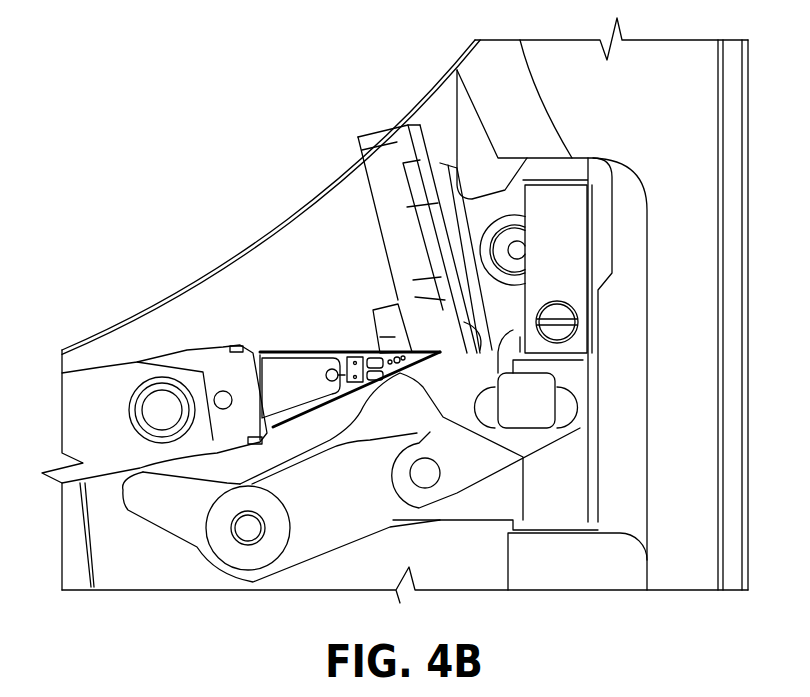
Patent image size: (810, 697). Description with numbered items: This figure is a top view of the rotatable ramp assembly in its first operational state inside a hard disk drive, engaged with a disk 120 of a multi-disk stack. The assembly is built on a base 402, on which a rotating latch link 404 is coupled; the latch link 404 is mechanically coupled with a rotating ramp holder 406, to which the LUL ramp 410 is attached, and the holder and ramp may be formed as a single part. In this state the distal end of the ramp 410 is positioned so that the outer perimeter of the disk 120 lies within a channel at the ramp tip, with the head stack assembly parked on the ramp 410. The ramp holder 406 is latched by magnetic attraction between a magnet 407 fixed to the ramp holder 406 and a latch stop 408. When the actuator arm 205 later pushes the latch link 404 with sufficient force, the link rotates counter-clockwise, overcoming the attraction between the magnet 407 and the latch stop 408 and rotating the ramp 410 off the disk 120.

The disk 120 is at (277, 214).
The actuator arm 205 is at (120, 377).
The base 402 is at (570, 488).
The rotating latch link 404 is at (340, 533).
The rotating ramp holder 406 is at (583, 417).
The magnet 407 is at (545, 400).
The latch stop 408 is at (578, 230).
The LUL ramp 410 is at (393, 170).